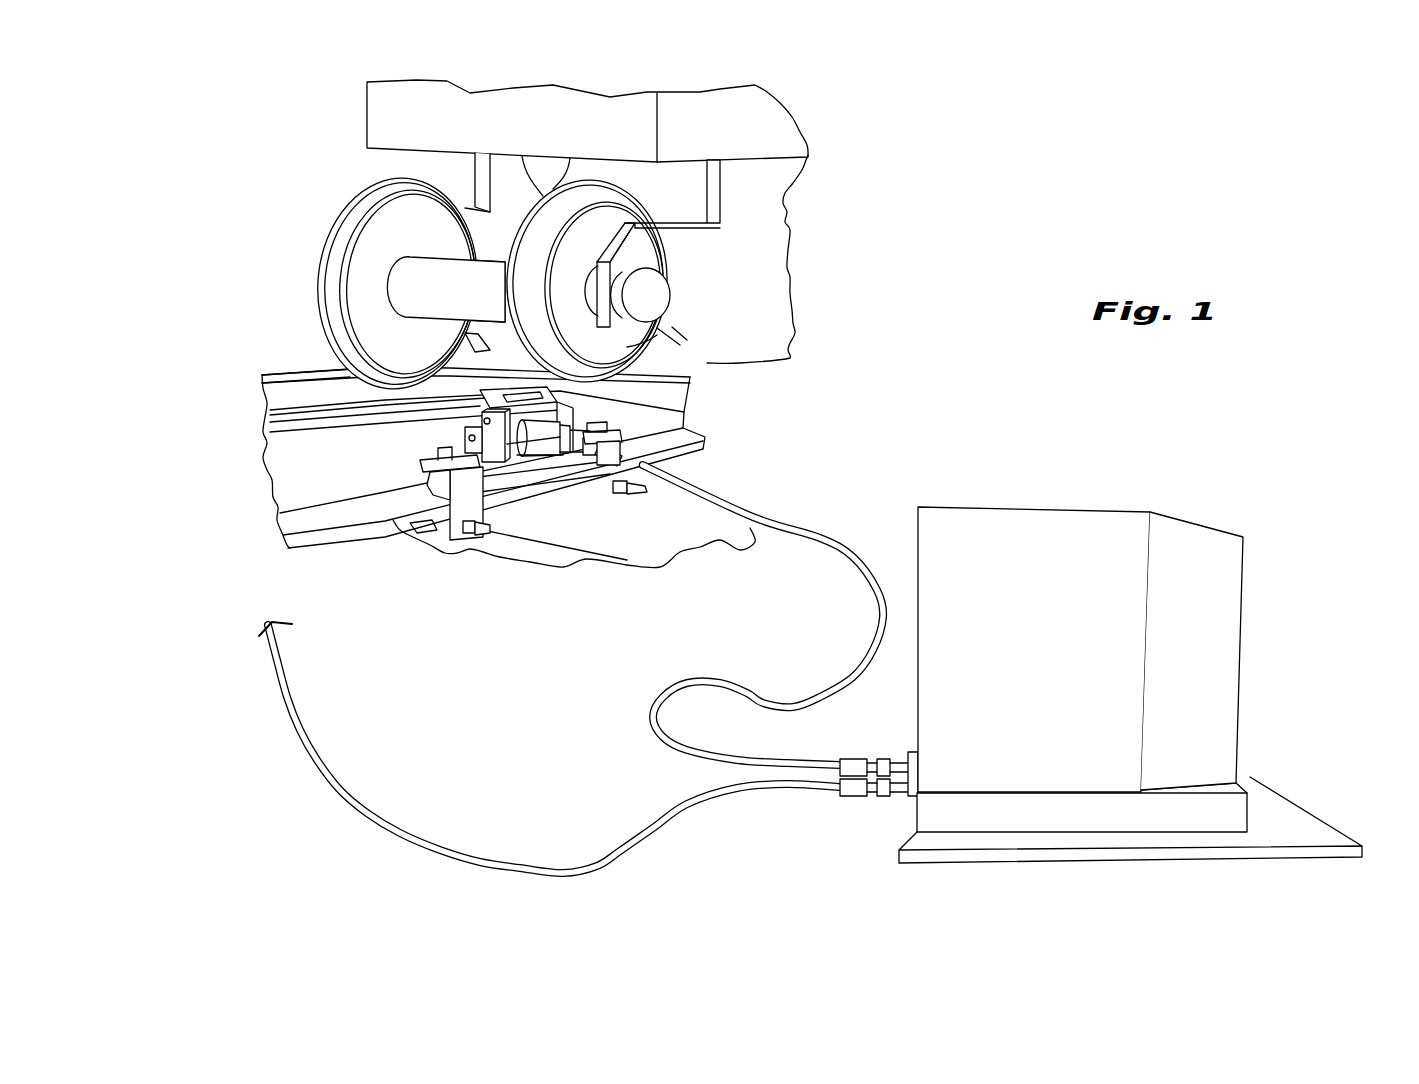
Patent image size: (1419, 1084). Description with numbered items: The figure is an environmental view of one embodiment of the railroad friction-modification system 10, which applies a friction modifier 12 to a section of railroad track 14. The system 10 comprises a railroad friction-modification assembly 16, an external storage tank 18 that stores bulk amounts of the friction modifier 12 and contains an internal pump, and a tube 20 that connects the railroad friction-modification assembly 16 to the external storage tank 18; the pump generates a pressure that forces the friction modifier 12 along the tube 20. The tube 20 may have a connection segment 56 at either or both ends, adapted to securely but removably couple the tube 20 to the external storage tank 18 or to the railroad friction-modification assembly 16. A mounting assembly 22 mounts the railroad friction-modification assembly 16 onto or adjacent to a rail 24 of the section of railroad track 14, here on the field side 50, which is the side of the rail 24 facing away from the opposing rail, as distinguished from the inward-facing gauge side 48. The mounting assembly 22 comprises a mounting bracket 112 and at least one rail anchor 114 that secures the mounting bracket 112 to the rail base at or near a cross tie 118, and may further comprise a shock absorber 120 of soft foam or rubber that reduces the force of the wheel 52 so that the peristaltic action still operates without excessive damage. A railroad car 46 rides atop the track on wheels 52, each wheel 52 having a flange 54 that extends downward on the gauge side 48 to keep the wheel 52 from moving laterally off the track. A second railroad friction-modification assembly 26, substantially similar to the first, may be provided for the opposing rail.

The railroad friction-modification system 10 is at (1010, 244).
The friction modifier 12 is at (956, 541).
The section of railroad track 14 is at (268, 238).
The railroad friction-modification assembly 16 is at (693, 467).
The external storage tank 18 is at (1123, 525).
The tube 20 is at (820, 537).
The mounting assembly 22 is at (420, 528).
The rail 24 is at (657, 409).
The second railroad friction-modification assembly 26 is at (300, 377).
The railroad car 46 is at (387, 96).
The gauge side 48 is at (266, 395).
The field side 50 is at (229, 348).
The wheel 52 is at (630, 347).
The flange 54 is at (440, 188).
The connection segment 56 is at (600, 470).
The mounting bracket 112 is at (497, 487).
The rail anchor 114 is at (490, 540).
The cross tie 118 is at (693, 535).
The shock absorber 120 is at (503, 473).